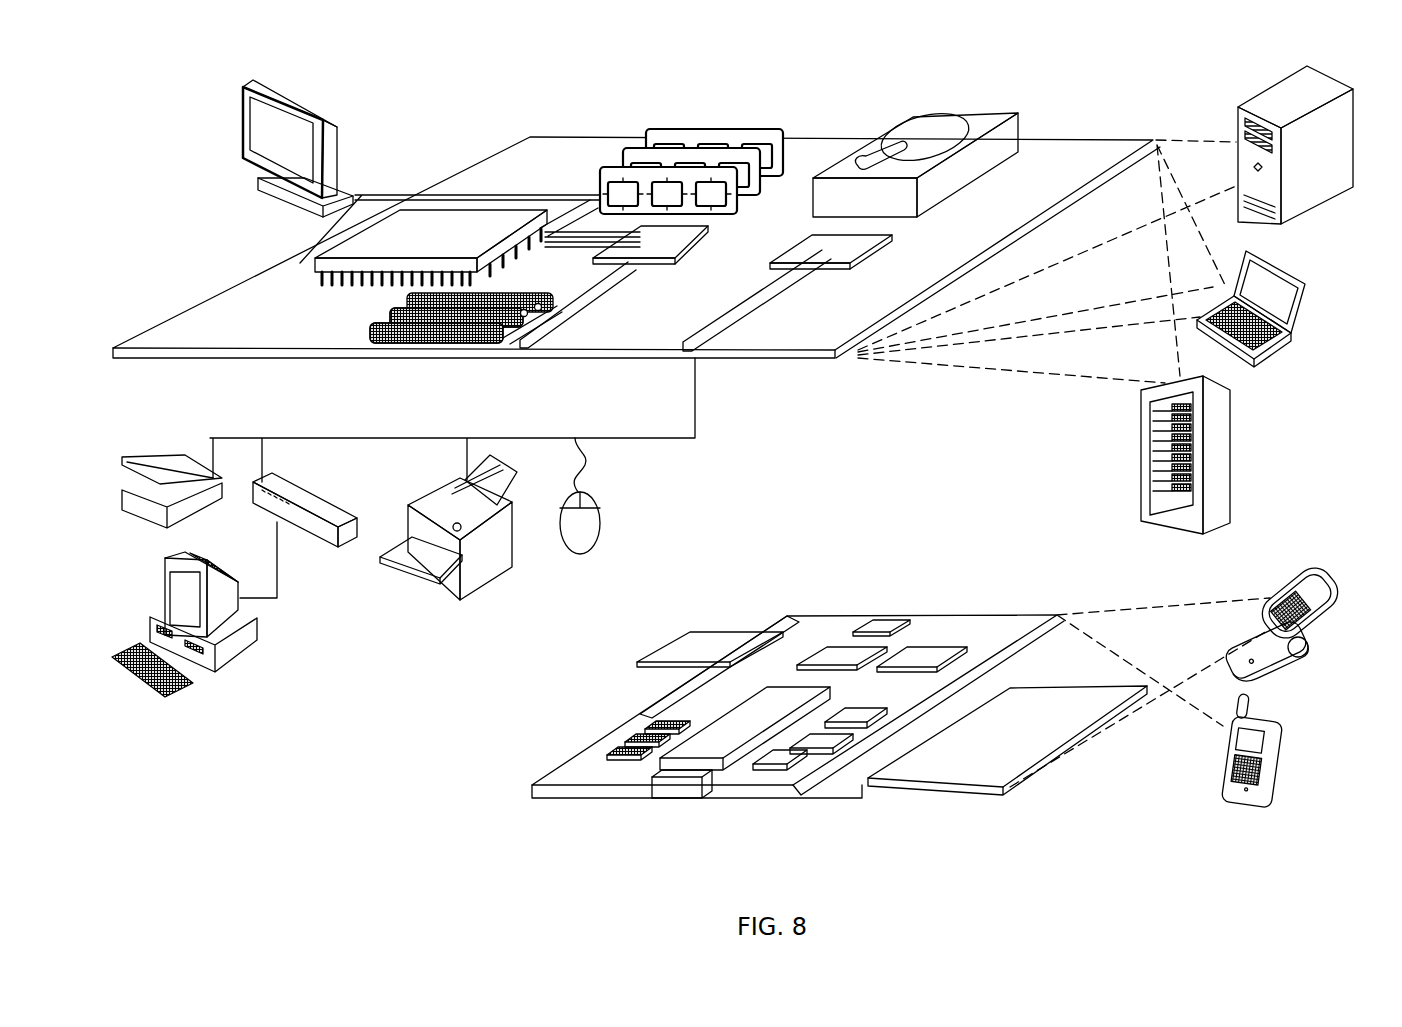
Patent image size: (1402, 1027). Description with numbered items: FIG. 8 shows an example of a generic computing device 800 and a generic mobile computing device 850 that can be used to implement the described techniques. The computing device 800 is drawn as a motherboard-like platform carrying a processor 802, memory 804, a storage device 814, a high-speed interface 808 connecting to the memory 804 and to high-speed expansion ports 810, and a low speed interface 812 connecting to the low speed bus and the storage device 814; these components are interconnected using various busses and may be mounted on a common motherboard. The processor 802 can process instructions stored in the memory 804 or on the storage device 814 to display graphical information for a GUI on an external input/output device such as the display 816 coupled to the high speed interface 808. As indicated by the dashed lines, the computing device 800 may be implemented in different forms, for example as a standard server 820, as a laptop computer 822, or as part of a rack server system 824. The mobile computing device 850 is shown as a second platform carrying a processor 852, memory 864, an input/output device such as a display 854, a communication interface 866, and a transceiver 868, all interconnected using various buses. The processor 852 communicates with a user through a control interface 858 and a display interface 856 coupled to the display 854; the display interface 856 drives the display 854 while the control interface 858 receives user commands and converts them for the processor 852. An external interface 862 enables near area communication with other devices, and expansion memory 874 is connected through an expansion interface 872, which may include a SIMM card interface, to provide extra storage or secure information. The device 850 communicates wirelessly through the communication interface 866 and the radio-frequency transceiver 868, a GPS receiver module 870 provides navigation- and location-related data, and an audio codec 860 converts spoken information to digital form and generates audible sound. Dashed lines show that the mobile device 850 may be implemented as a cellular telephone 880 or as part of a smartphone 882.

The computing device 800 is at (446, 105).
The processor 802 is at (300, 262).
The memory 804 is at (657, 133).
The high-speed interface 808 is at (595, 210).
The high-speed expansion ports 810 is at (372, 326).
The low speed interface 812 is at (817, 245).
The storage device 814 is at (903, 127).
The display 816 is at (245, 86).
The standard server 820 is at (1236, 118).
The laptop computer 822 is at (1305, 276).
The rack server system 824 is at (1141, 480).
The mobile computer device 850 is at (498, 801).
The processor 852 is at (717, 752).
The display 854 is at (992, 781).
The display interface 856 is at (796, 772).
The control interface 858 is at (833, 752).
The audio codec 860 is at (855, 728).
The external interface 862 is at (682, 782).
The memory 864 is at (623, 738).
The communication interface 866 is at (841, 656).
The transceiver 868 is at (923, 650).
The GPS receiver module 870 is at (900, 632).
The expansion interface 872 is at (767, 630).
The expansion memory 874 is at (695, 630).
The cellular telephone 880 is at (1292, 574).
The smartphone 882 is at (1228, 758).